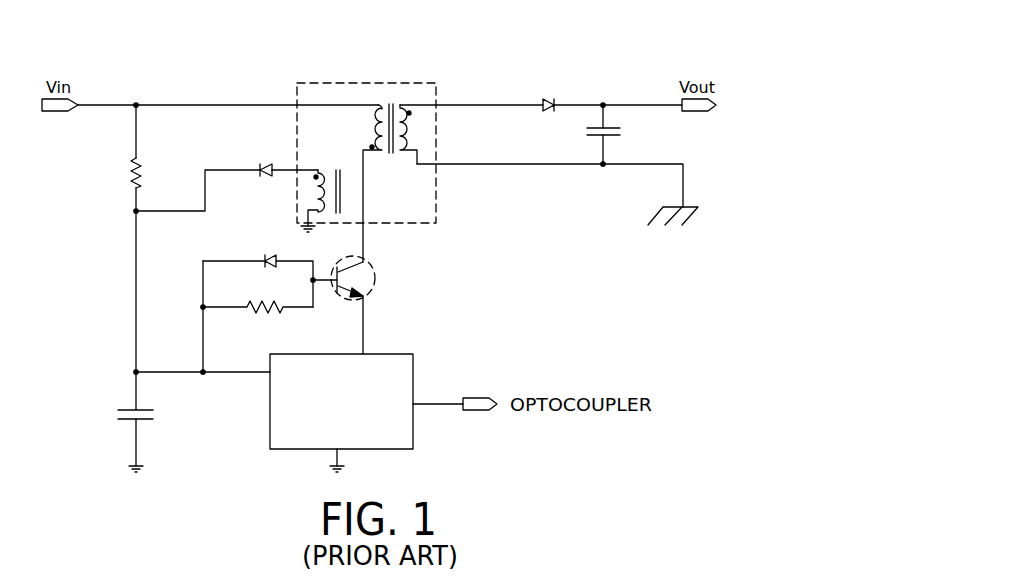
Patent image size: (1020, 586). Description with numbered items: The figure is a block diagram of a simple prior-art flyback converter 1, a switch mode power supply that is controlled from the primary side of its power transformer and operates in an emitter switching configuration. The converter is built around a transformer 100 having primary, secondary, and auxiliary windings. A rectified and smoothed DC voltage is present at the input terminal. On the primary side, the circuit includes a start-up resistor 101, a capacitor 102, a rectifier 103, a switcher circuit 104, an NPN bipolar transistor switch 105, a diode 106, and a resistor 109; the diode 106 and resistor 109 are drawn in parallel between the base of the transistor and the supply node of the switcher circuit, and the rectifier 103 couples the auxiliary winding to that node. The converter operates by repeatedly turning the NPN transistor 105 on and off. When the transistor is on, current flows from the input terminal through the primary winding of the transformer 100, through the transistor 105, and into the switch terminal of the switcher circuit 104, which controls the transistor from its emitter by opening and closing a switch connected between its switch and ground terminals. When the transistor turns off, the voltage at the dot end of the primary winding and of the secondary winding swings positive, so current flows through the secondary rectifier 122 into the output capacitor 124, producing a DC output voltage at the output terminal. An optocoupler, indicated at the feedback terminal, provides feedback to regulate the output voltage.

The flyback converter 1 is at (622, 44).
The transformer 100 is at (368, 82).
The start-up resistor 101 is at (140, 173).
The capacitor 102 is at (140, 410).
The rectifier 103 is at (271, 166).
The switcher circuit 104 is at (356, 408).
The NPN bipolar transistor switch 105 is at (375, 273).
The diode 106 is at (271, 257).
The resistor 109 is at (256, 313).
The secondary rectifier 122 is at (548, 100).
The output capacitor 124 is at (594, 136).